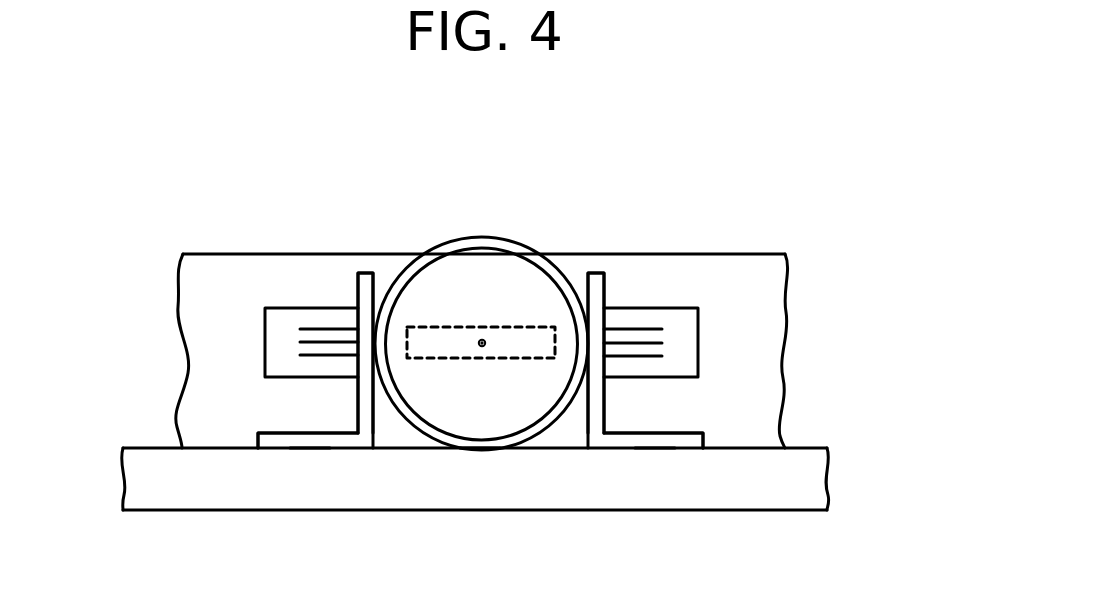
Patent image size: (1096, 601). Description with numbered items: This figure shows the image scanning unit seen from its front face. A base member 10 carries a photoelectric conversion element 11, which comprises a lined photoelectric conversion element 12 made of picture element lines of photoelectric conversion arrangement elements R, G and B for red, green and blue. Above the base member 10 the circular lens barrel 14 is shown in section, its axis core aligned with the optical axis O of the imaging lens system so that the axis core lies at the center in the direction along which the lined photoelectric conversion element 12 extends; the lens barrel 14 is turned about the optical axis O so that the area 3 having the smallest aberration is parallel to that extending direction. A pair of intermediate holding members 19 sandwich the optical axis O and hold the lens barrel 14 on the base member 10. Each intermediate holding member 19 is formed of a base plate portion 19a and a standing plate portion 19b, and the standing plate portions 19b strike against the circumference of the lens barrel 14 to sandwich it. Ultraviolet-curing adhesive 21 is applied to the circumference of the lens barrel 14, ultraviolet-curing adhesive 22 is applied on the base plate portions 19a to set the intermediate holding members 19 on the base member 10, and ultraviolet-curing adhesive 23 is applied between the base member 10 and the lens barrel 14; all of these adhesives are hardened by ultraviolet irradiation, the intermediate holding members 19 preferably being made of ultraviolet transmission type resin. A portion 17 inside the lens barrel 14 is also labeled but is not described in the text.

The area having the smallest aberration 3 is at (445, 358).
The optical axis O is at (482, 350).
The base member 10 is at (565, 497).
The photoelectric conversion element 11 is at (717, 267).
The lined photoelectric conversion element 12 is at (283, 308).
The lens barrel 14 is at (497, 230).
The cylindrical portion 17 is at (457, 268).
The intermediate holding member 19 is at (270, 412).
The base plate portion 19a is at (258, 434).
The standing plate portion 19b is at (366, 273).
The ultraviolet-curing adhesive 21 is at (362, 342).
The ultraviolet-curing adhesive 22 is at (310, 448).
The ultraviolet-curing adhesive 23 is at (478, 452).
The red photoelectric conversion arrangement element R is at (317, 329).
The green photoelectric conversion arrangement element G is at (657, 339).
The blue photoelectric conversion arrangement element B is at (327, 357).